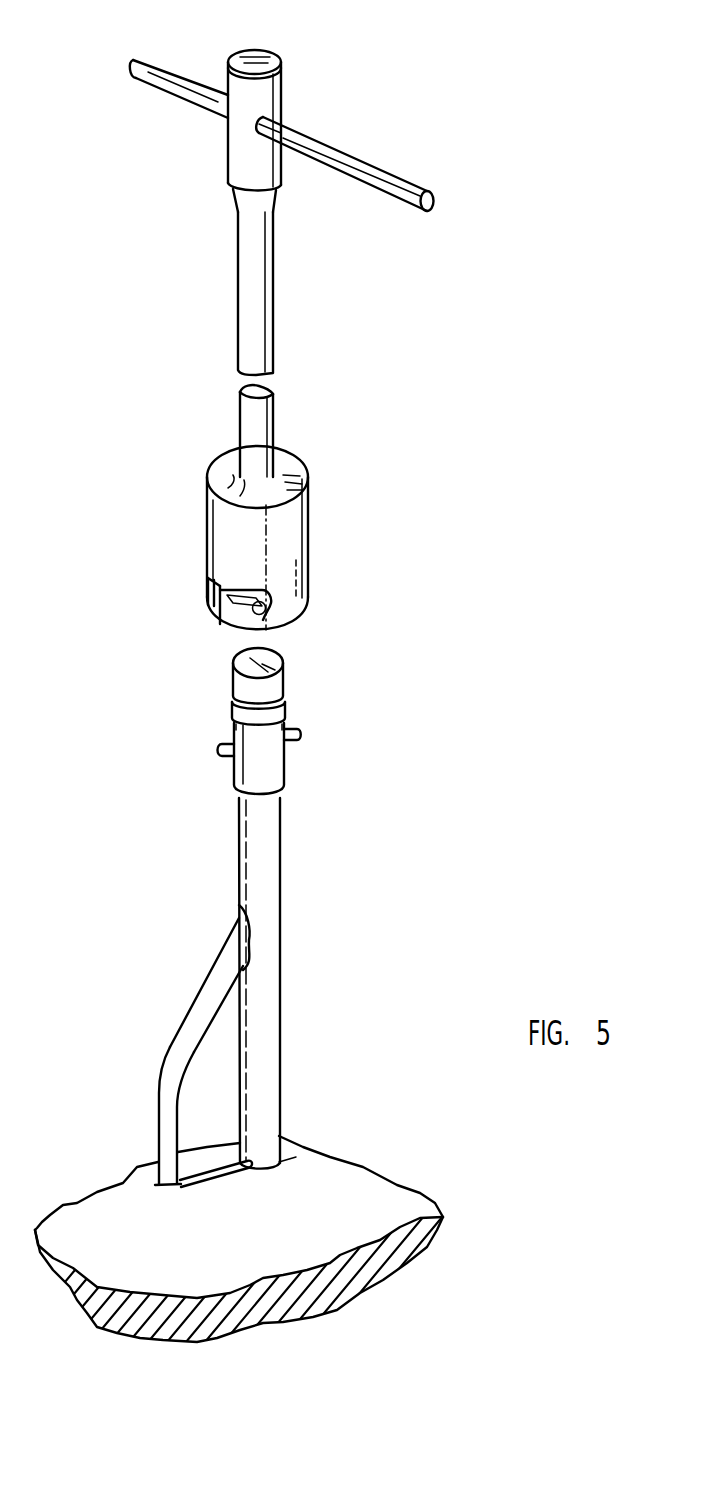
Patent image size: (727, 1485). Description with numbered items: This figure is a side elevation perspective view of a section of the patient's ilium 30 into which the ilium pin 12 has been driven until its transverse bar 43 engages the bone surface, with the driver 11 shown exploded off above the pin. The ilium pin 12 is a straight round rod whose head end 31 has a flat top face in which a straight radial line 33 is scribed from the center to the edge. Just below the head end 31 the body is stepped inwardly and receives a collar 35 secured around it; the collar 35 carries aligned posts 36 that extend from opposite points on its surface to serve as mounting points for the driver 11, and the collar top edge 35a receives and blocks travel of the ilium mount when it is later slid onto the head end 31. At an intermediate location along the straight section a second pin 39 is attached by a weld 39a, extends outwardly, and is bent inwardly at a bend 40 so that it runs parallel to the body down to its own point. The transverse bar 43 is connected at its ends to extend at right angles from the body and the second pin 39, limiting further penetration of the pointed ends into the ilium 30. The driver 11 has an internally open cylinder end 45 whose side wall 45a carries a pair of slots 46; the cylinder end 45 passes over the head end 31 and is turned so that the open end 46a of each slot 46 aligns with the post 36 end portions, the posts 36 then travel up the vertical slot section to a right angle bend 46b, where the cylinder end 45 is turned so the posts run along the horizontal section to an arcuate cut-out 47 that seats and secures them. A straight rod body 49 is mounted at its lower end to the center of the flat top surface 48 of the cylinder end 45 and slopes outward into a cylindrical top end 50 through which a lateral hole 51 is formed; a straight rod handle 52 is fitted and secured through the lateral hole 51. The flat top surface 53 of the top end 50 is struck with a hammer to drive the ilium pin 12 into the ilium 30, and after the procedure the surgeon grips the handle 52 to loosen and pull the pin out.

The driver 11 is at (285, 279).
The ilium pin 12 is at (298, 881).
The ilium 30 is at (236, 1256).
The head end 31 is at (287, 690).
The straight radial line 33 is at (285, 668).
The collar 35 is at (275, 768).
The collar top edge 35a is at (233, 665).
The posts 36 is at (220, 757).
The second pin 39 is at (200, 1006).
The weld 39a is at (240, 912).
The bend 40 is at (165, 1078).
The transverse bar 43 is at (222, 1178).
The cylinder end 45 is at (265, 562).
The socket wall 45a is at (305, 610).
The slots 46 is at (240, 588).
The open end of slot 46a is at (230, 598).
The right angle bend of slot 46b is at (212, 582).
The arcuate cut-out 47 is at (266, 612).
The flat top surface of cylinder end 48 is at (297, 460).
The straight rod body 49 is at (264, 337).
The cylindrical top end 50 is at (283, 88).
The lateral hole 51 is at (284, 119).
The handle 52 is at (365, 167).
The flat top surface 53 is at (258, 50).